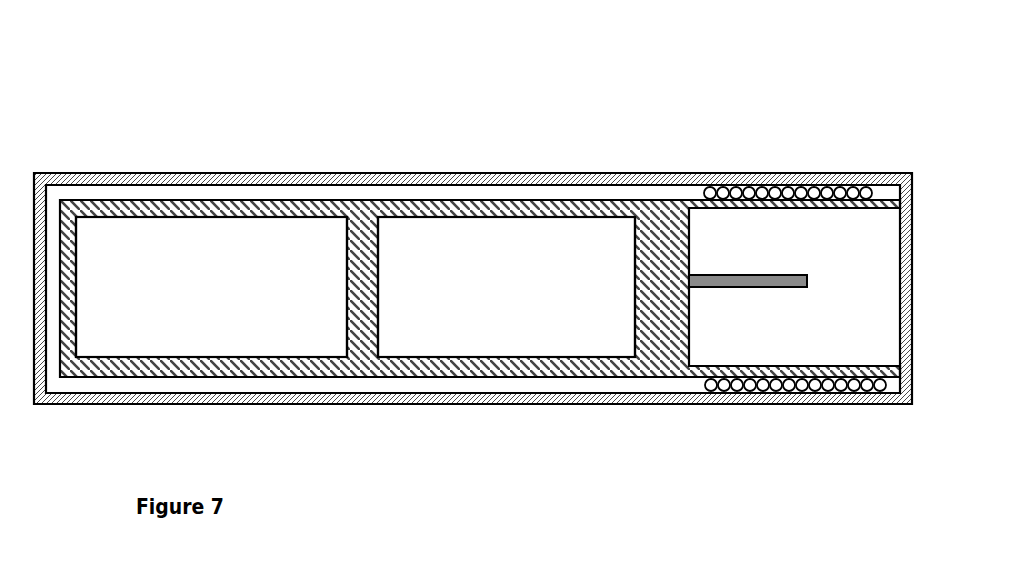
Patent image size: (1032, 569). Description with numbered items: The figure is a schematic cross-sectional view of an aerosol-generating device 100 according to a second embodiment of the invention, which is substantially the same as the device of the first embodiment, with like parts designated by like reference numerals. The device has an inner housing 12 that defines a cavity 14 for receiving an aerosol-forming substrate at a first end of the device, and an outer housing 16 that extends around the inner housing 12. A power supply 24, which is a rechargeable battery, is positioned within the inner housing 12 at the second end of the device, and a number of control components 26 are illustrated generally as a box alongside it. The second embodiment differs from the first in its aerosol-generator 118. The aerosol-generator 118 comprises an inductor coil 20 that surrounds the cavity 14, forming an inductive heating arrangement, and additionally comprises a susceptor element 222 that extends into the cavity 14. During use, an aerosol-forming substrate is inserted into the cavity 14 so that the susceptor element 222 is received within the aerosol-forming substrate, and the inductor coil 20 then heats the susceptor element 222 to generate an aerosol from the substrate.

The aerosol-generating device 100 is at (778, 125).
The outer housing 16 is at (278, 181).
The inner housing 12 is at (532, 210).
The power supply 24 is at (225, 287).
The control components 26 is at (520, 287).
The inductor coil 20 is at (720, 192).
The susceptor element 222 is at (783, 283).
The cavity 14 is at (830, 345).
The aerosol-generator 118 is at (729, 396).